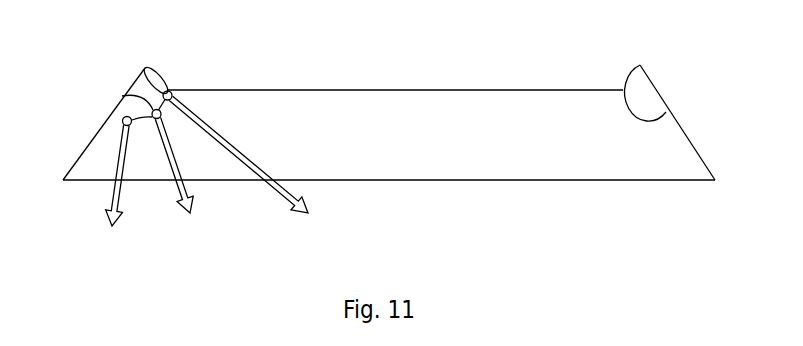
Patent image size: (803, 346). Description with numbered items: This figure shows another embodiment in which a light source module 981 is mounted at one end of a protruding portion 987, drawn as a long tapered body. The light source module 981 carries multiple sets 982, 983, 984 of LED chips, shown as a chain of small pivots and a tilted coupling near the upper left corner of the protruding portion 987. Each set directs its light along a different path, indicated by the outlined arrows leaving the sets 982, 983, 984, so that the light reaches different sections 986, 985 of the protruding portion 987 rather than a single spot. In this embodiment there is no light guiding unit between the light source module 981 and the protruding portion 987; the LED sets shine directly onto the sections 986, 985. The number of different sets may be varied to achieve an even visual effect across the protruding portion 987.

The light source module 981 is at (163, 79).
The set of LED chips 982 is at (143, 71).
The set of LED chips 983 is at (124, 97).
The set of LED chips 984 is at (118, 118).
The section of the protruding portion 985 is at (285, 198).
The section of the protruding portion 986 is at (176, 181).
The protruding portion 987 is at (454, 165).